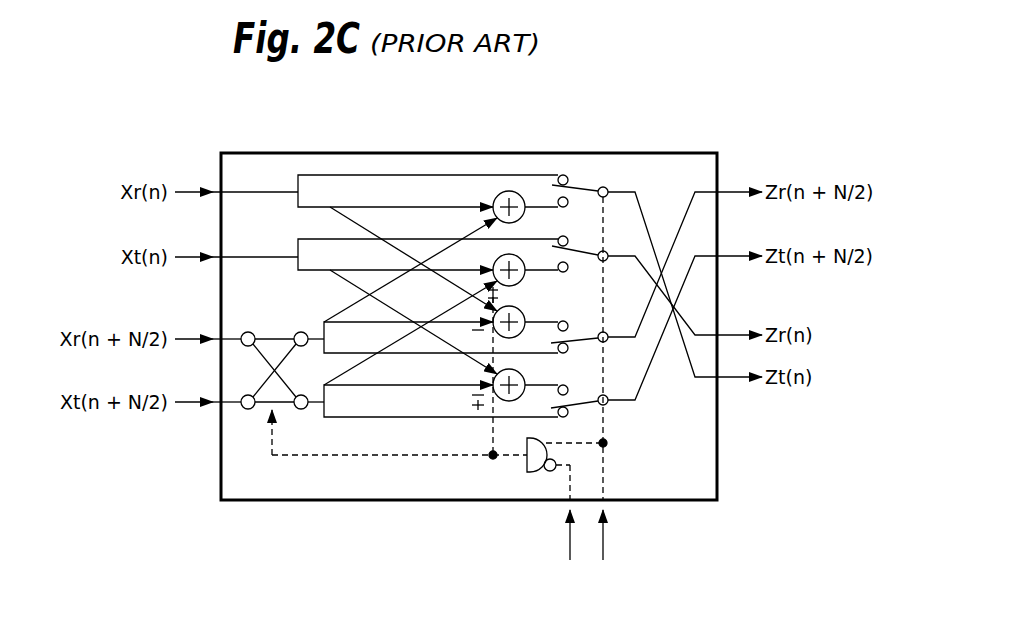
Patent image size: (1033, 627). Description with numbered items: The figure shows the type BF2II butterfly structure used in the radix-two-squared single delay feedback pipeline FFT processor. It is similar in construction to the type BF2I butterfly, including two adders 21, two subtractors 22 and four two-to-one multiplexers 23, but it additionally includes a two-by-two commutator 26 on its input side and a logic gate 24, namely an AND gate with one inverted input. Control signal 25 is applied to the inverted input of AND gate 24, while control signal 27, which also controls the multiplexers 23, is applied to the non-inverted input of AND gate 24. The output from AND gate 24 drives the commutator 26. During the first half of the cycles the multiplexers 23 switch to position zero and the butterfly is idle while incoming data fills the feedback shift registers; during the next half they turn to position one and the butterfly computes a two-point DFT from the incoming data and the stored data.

The adders 21 is at (495, 260).
The subtractors 22 is at (491, 334).
The multiplexers 23 is at (610, 250).
The logic gate 24 is at (536, 459).
The control signal 25 is at (570, 543).
The 2×2 commutator 26 is at (237, 387).
The control signal 27 is at (604, 543).